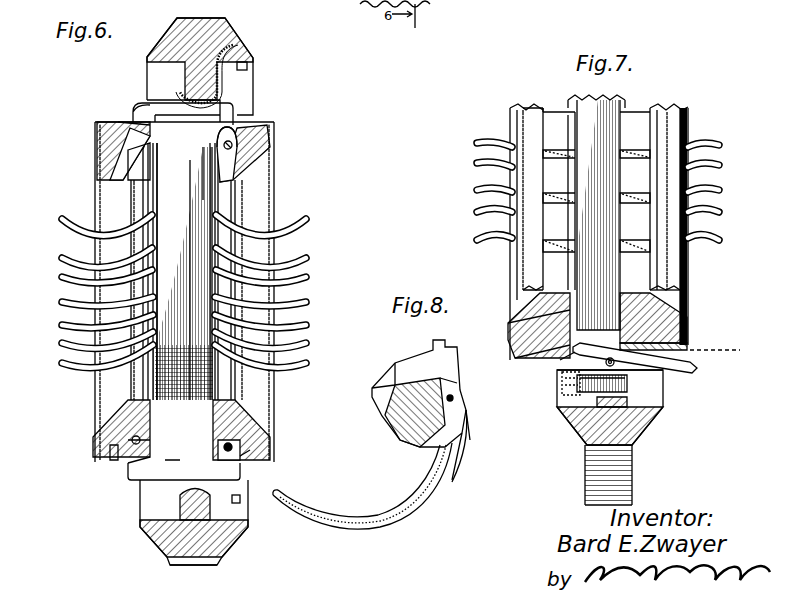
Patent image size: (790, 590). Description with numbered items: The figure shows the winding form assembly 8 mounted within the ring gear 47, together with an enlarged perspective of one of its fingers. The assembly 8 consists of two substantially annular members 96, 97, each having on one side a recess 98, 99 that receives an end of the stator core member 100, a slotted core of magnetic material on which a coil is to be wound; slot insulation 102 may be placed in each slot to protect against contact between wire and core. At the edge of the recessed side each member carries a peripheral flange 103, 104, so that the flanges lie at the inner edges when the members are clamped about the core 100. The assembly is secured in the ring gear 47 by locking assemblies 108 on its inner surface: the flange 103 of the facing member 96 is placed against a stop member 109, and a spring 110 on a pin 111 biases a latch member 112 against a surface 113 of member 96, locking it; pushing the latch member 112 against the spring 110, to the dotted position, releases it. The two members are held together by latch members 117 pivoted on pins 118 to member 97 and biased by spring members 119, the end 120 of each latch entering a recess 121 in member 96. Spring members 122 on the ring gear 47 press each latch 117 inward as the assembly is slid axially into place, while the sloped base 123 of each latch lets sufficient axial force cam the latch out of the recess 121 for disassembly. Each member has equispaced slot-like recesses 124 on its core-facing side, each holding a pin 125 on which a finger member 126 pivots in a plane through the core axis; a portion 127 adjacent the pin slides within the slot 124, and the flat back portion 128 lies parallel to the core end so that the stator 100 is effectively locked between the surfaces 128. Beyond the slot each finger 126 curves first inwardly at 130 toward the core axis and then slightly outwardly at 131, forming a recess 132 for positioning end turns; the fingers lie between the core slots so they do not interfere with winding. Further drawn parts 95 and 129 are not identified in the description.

In FIG. 6, the winding form assembly 8 is at (277, 183).
In FIG. 6, the ring gear 47 is at (215, 535).
In FIG. 7, the ring gear 47 is at (635, 433).
In FIG. 6, the end cap block 95 is at (243, 45).
In FIG. 7, the end cap block 95 is at (570, 425).
In FIG. 6, the annular member 96 is at (97, 135).
In FIG. 7, the annular member 96 is at (525, 262).
In FIG. 6, the annular member 97 is at (274, 142).
In FIG. 7, the annular member 97 is at (680, 262).
In FIG. 7, the recess 98 is at (560, 318).
In FIG. 7, the recess 99 is at (630, 322).
In FIG. 6, the stator core member 100 is at (195, 203).
In FIG. 7, the stator core member 100 is at (600, 122).
In FIG. 6, the slot insulation 102 is at (283, 252).
In FIG. 7, the peripheral flange 103 is at (565, 360).
In FIG. 7, the peripheral flange 104 is at (680, 360).
In FIG. 7, the locking assembly 108 is at (635, 375).
In FIG. 7, the stop member 109 is at (540, 360).
In FIG. 7, the spring 110 is at (580, 372).
In FIG. 7, the pin 111 is at (688, 345).
In FIG. 7, the latch member 112 is at (700, 350).
In FIG. 7, the surface 113 is at (575, 338).
In FIG. 6, the latch member 117 is at (230, 113).
In FIG. 6, the pin 118 is at (232, 446).
In FIG. 6, the spring member 119 is at (250, 452).
In FIG. 6, the end 120 is at (140, 467).
In FIG. 6, the recess 121 is at (130, 465).
In FIG. 6, the spring member 122 is at (215, 93).
In FIG. 6, the sloped base 123 is at (150, 125).
In FIG. 6, the slot-like recess 124 is at (130, 130).
In FIG. 8, the slot-like recess 124 is at (445, 372).
In FIG. 6, the pin 125 is at (137, 147).
In FIG. 8, the pin 125 is at (455, 398).
In FIG. 6, the finger member 126 is at (62, 300).
In FIG. 7, the finger member 126 is at (478, 160).
In FIG. 8, the finger member 126 is at (403, 525).
In FIG. 6, the portion 127 is at (140, 160).
In FIG. 7, the portion 127 is at (557, 152).
In FIG. 8, the portion 127 is at (460, 423).
In FIG. 6, the back portion 128 is at (210, 168).
In FIG. 8, the back portion 128 is at (473, 417).
In FIG. 8, the fin inner edge 129 is at (363, 522).
In FIG. 8, the inwardly extending portion 130 is at (423, 493).
In FIG. 8, the outwardly extending portion 131 is at (285, 502).
In FIG. 8, the recess 132 is at (380, 527).